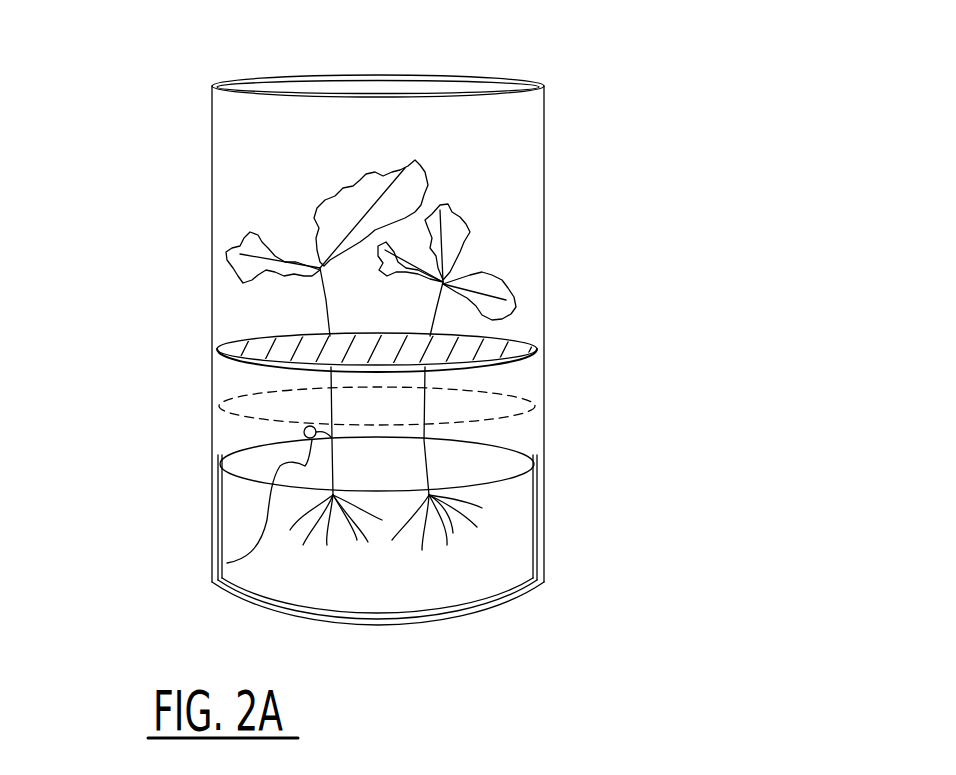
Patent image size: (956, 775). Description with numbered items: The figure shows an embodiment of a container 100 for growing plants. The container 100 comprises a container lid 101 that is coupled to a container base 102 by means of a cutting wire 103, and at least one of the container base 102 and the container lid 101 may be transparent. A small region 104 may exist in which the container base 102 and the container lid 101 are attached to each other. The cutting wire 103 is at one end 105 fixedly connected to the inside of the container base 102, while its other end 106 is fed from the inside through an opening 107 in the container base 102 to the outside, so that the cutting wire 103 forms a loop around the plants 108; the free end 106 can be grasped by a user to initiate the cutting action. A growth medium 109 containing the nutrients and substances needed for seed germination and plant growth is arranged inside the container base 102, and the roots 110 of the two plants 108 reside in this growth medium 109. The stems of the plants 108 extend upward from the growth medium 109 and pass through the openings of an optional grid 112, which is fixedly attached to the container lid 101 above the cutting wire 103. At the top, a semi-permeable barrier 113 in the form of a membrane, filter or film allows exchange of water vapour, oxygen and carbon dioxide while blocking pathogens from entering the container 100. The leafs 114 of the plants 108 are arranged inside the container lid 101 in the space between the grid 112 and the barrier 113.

The container 100 is at (790, 72).
The container lid 101 is at (421, 316).
The container base 102 is at (439, 552).
The cutting wire 103 is at (550, 442).
The small region 104 is at (262, 440).
The end of cutting wire 105 is at (238, 418).
The free end of cutting wire 106 is at (227, 563).
The opening 107 is at (322, 438).
The plants 108 is at (431, 310).
The growth medium 109 is at (502, 576).
The roots 110 is at (450, 540).
The grid 112 is at (517, 345).
The semi-permeable barrier 113 is at (490, 85).
The leafs 114 is at (408, 167).